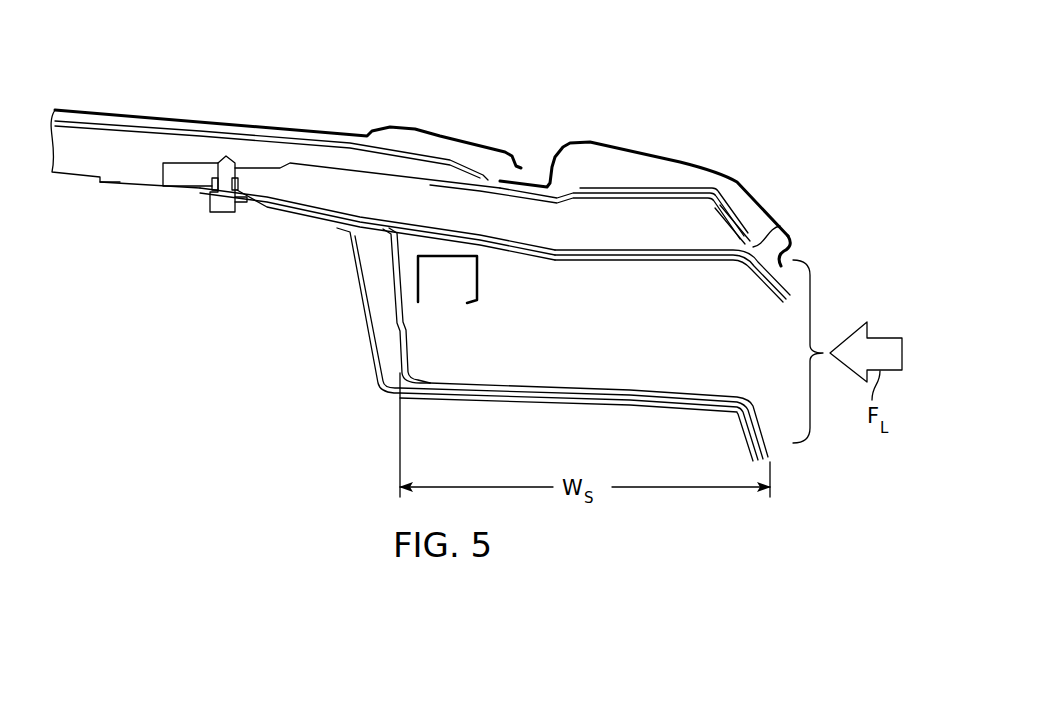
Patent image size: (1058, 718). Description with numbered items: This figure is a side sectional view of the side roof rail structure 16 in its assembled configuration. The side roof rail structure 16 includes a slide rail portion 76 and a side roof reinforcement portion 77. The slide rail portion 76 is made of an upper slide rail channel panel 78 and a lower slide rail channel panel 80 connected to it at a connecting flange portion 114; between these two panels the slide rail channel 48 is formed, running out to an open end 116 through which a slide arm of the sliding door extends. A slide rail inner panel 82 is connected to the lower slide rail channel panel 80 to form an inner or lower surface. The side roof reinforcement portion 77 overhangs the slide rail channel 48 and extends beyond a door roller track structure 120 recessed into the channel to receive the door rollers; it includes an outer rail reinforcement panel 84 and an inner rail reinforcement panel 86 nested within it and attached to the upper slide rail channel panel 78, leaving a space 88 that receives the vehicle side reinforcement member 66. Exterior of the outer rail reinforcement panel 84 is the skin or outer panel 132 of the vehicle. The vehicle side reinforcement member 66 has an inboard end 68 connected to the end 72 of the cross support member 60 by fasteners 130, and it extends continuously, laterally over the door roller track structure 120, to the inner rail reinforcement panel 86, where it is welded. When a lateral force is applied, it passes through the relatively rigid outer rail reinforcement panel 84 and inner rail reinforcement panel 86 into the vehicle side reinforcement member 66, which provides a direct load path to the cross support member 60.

The side roof rail structure 16 is at (732, 85).
The side roof reinforcement portion 77 is at (753, 117).
The fasteners 130 is at (225, 160).
The inboard end 68 is at (249, 154).
The vehicle side reinforcement member 66 is at (327, 183).
The outer panel 132 is at (600, 145).
The outer rail reinforcement panel 84 is at (667, 187).
The space 88 is at (726, 218).
The inner rail reinforcement panel 86 is at (780, 223).
The cross support member 60 is at (73, 183).
The end 72 is at (145, 203).
The connecting flange portion 114 is at (309, 230).
The door roller track structure 120 is at (480, 282).
The slide rail portion 76 is at (323, 357).
The upper slide rail channel panel 78 is at (675, 264).
The lower slide rail channel panel 80 is at (577, 383).
The slide rail inner panel 82 is at (533, 404).
The slide rail channel 48 is at (638, 366).
The open end 116 is at (740, 356).